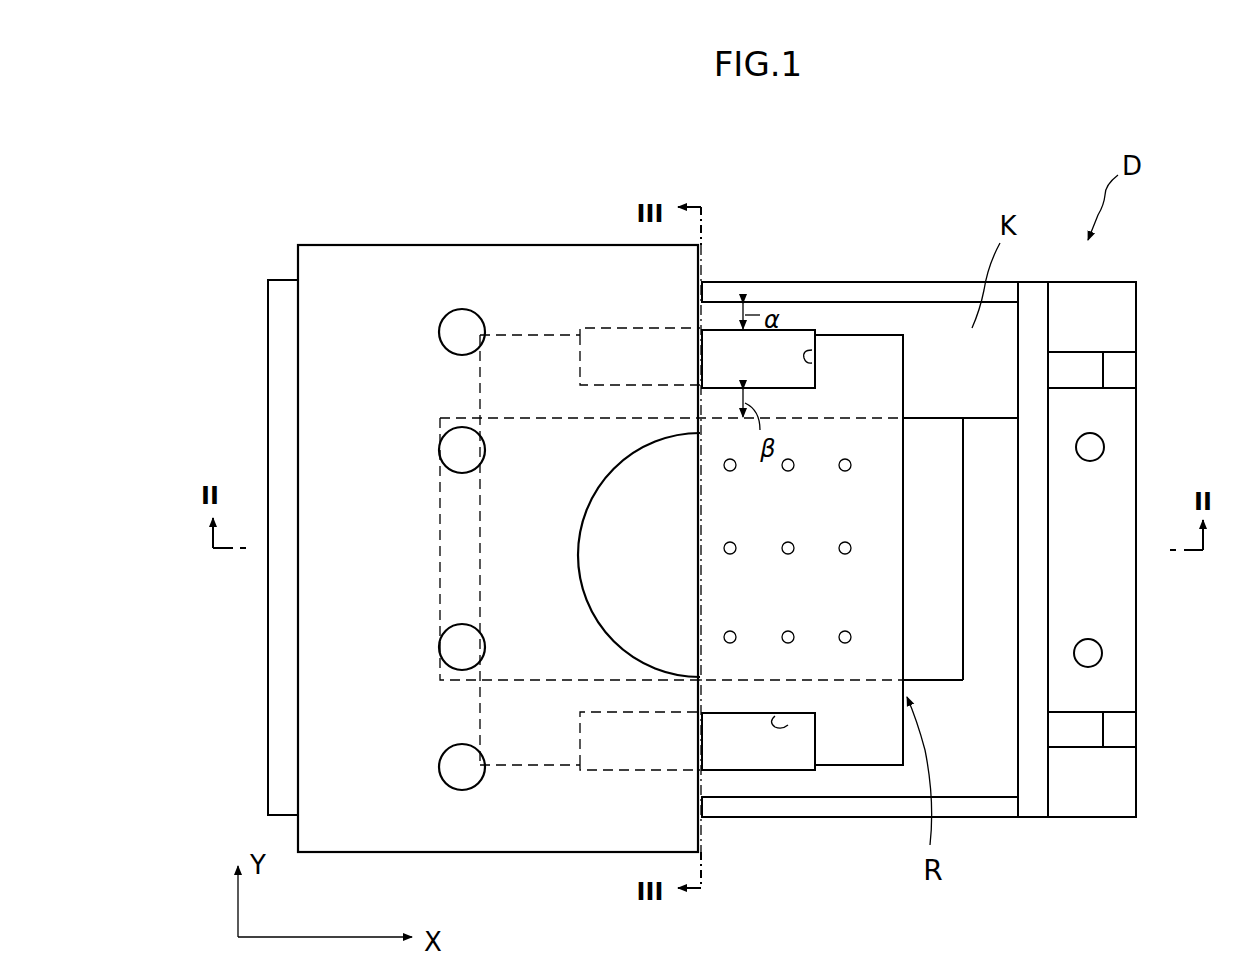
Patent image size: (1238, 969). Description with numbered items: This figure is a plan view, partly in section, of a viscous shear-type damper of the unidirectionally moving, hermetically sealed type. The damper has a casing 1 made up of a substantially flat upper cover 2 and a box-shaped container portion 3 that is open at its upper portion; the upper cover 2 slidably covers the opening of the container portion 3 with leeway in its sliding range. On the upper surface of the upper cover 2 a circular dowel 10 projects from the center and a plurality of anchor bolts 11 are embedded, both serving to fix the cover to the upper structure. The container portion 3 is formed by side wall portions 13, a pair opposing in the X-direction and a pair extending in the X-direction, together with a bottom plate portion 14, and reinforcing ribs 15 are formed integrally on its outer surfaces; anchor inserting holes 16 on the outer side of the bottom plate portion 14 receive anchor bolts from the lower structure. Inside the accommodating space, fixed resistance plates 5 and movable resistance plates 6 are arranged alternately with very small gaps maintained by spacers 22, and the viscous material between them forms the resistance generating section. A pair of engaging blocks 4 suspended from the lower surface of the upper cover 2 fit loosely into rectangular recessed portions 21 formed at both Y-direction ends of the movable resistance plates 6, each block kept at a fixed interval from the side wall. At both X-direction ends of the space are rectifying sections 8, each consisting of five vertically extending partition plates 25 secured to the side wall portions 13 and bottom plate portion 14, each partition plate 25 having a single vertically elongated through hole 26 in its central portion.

The casing 1 is at (888, 115).
The upper cover 2 is at (547, 243).
The container portion 3 is at (912, 492).
The engaging block 4 is at (790, 370).
The fixed resistance plate 5 is at (938, 668).
The movable resistance plate 6 is at (853, 508).
The rectifying section 8 is at (984, 410).
The dowel 10 is at (608, 500).
The anchor bolt 11 is at (442, 338).
The side wall portion 13 is at (767, 292).
The bottom plate portion 14 is at (1105, 800).
The reinforcing rib 15 is at (1090, 360).
The anchor inserting hole 16 is at (1090, 648).
The recessed portion 21 is at (812, 360).
The spacer 22 is at (733, 554).
The partition plate 25 is at (962, 425).
The through hole 26 is at (990, 424).